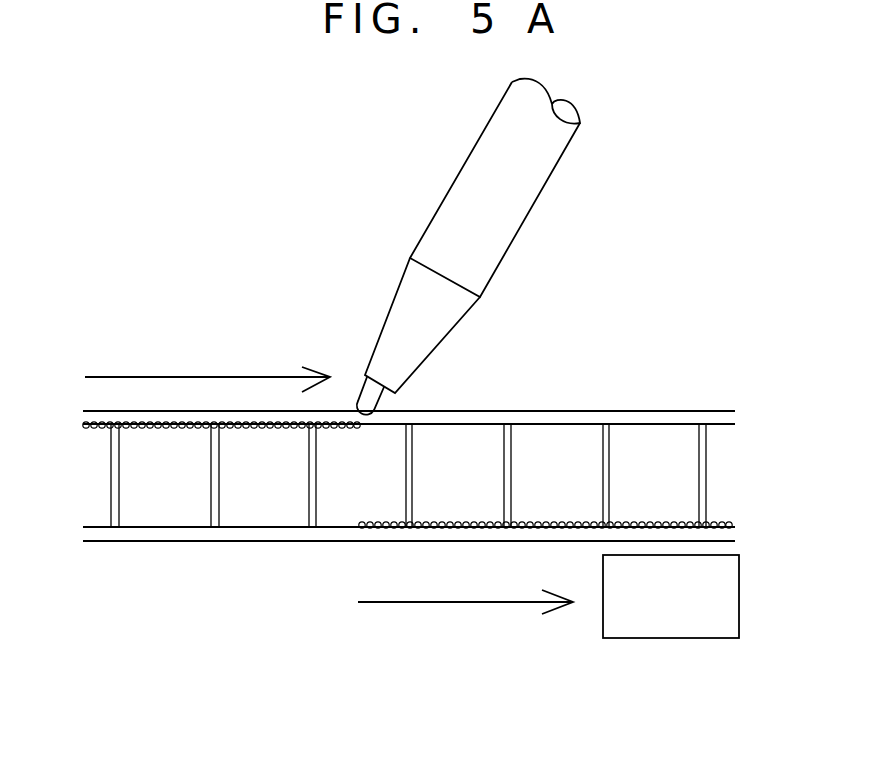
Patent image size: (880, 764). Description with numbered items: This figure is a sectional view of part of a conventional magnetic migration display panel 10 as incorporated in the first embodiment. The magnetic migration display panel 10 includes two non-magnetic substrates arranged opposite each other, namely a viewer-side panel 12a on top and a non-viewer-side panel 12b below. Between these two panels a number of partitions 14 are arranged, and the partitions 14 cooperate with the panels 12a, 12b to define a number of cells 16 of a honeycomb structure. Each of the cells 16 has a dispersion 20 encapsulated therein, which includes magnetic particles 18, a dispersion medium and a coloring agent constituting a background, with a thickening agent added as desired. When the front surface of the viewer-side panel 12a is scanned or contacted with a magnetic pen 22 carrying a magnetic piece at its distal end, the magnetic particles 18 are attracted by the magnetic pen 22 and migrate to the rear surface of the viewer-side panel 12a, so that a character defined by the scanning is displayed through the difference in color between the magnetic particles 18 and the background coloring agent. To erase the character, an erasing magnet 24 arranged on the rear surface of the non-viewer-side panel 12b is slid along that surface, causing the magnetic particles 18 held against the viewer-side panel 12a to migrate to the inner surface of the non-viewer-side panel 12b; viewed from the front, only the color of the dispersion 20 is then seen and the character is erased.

The magnetic migration display panel 10 is at (623, 318).
The viewer-side panel 12a is at (653, 417).
The non-viewer-side panel 12b is at (190, 542).
The partitions 14 is at (598, 468).
The cells 16 is at (340, 503).
The magnetic particles 18 is at (152, 428).
The dispersion 20 is at (673, 480).
The magnetic pen 22 is at (418, 318).
The erasing magnet 24 is at (642, 628).